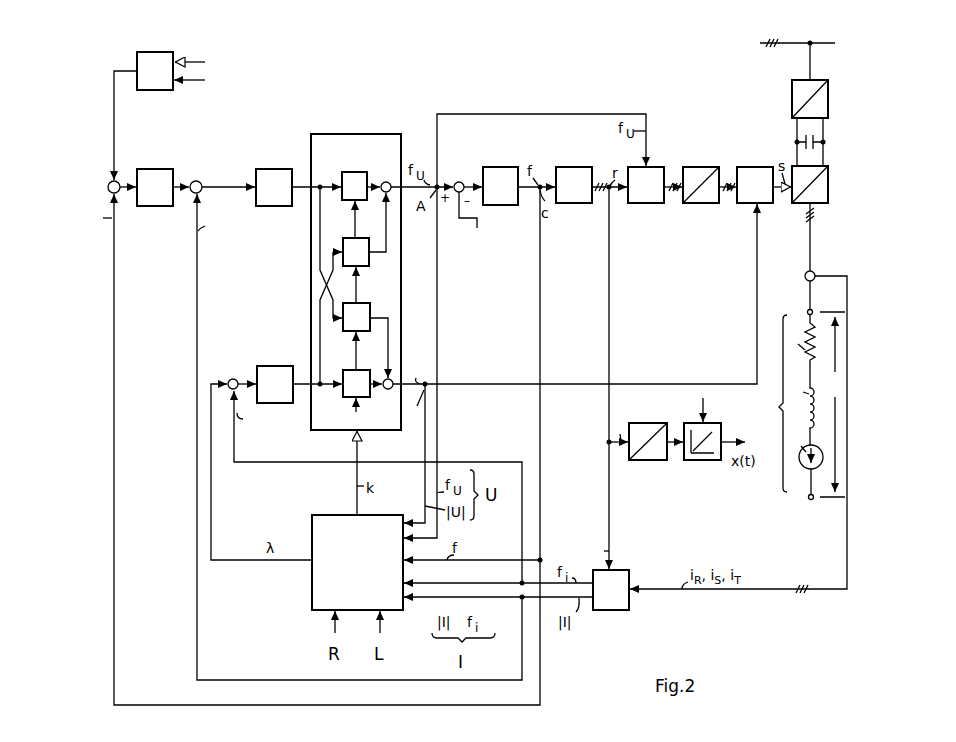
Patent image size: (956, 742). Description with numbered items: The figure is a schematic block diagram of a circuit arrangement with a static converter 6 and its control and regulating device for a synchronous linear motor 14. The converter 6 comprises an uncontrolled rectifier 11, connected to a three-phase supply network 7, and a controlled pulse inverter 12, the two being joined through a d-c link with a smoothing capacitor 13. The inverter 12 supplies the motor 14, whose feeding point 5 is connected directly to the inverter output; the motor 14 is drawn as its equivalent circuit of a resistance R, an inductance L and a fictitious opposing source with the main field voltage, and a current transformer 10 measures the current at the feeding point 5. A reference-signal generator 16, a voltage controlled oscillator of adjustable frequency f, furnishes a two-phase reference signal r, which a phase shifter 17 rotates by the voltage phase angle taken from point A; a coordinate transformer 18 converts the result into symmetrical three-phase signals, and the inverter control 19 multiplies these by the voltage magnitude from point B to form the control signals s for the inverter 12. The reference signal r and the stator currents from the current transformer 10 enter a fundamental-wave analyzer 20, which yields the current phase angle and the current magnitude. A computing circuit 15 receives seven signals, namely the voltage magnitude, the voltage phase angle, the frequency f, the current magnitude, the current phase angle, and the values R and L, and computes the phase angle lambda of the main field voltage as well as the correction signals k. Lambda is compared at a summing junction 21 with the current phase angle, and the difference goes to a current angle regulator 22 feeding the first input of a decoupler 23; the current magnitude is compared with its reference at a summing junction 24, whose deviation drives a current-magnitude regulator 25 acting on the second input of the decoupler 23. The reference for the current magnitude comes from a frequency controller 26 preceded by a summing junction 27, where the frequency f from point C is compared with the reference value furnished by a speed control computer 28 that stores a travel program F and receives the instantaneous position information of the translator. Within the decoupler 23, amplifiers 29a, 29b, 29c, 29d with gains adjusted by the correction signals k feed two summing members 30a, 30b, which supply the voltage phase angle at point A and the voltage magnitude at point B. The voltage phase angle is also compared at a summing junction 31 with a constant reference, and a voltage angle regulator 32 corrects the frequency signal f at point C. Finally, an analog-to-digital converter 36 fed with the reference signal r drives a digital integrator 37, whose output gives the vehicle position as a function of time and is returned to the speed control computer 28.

The feeding point 5 is at (807, 311).
The static converter 6 is at (809, 157).
The three-phase supply network 7 is at (828, 42).
The current transformer 10 is at (805, 276).
The uncontrolled rectifier 11 is at (792, 98).
The controlled inverter 12 is at (801, 205).
The smoothing capacitor 13 is at (818, 142).
The synchronous linear motor 14 is at (800, 406).
The computing circuit 15 is at (327, 582).
The reference-signal generator 16 is at (572, 167).
The phase shifter 17 is at (662, 167).
The coordinate transformer 18 is at (703, 167).
The inverter control 19 is at (757, 167).
The fundamental-wave analyzer 20 is at (624, 570).
The summing junction 21 is at (234, 379).
The current angle regulator 22 is at (275, 366).
The decoupler 23 is at (369, 267).
The summing junction 24 is at (201, 182).
The current-magnitude regulator 25 is at (274, 169).
The frequency controller 26 is at (152, 169).
The summing junction 27 is at (118, 182).
The speed control computer 28 is at (158, 42).
The amplifier 29a is at (352, 171).
The amplifier 29b is at (349, 238).
The amplifier 29c is at (359, 303).
The amplifier 29d is at (355, 370).
The summing member 30a is at (385, 181).
The summing member 30b is at (388, 390).
The summing junction 31 is at (459, 182).
The voltage angle regulator 32 is at (500, 167).
The analog-to-digital converter 36 is at (650, 423).
The digital integrator 37 is at (711, 423).